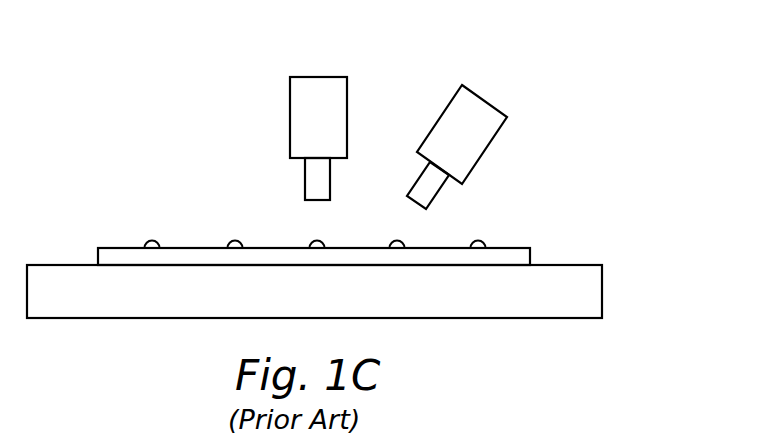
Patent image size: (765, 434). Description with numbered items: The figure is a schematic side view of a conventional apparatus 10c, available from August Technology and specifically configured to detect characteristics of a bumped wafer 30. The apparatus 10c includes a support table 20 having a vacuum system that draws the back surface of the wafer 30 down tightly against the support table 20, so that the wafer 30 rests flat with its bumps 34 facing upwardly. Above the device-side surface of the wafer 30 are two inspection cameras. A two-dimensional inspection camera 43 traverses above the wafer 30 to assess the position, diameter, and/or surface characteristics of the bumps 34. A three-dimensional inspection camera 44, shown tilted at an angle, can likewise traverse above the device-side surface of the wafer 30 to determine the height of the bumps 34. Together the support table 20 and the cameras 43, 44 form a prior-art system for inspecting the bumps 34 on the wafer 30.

The conventional apparatus 10c is at (630, 88).
The support table 20 is at (594, 292).
The bumped wafer 30 is at (532, 256).
The bumps 34 is at (227, 242).
The two-dimensional inspection camera 43 is at (298, 108).
The three-dimensional inspection camera 44 is at (480, 103).